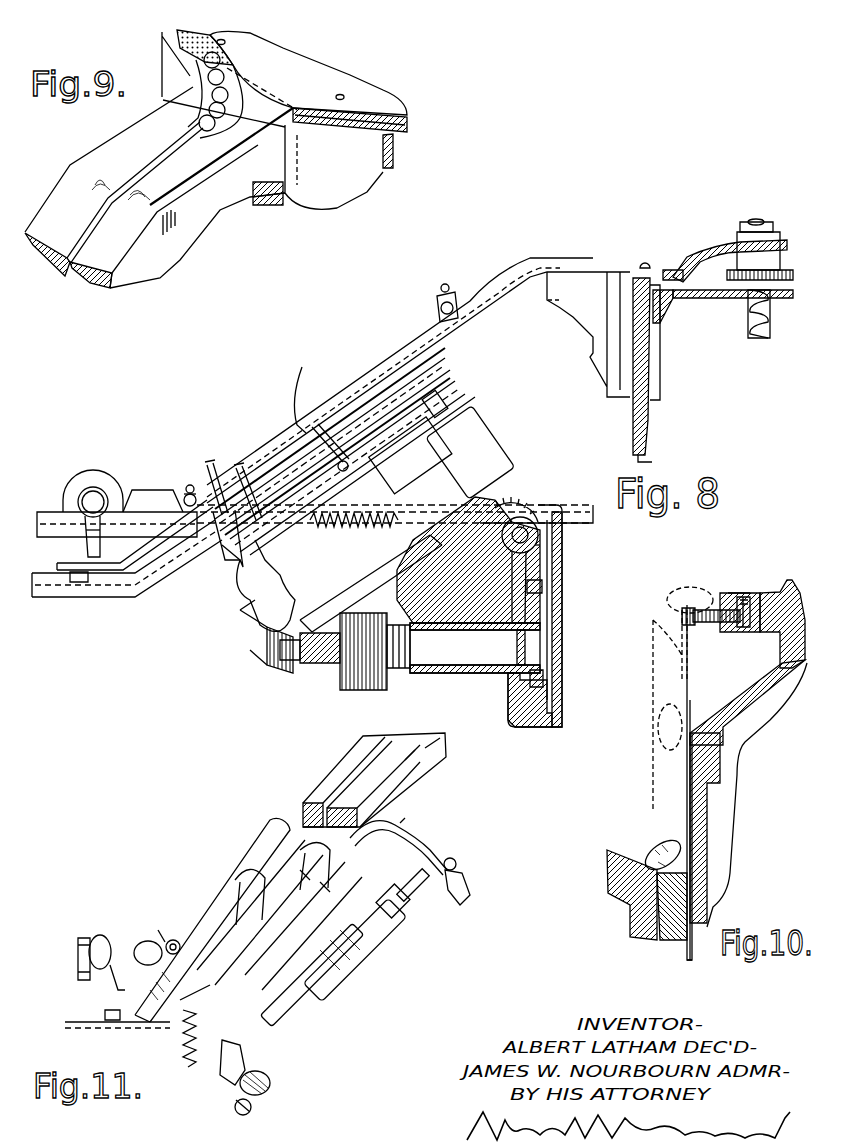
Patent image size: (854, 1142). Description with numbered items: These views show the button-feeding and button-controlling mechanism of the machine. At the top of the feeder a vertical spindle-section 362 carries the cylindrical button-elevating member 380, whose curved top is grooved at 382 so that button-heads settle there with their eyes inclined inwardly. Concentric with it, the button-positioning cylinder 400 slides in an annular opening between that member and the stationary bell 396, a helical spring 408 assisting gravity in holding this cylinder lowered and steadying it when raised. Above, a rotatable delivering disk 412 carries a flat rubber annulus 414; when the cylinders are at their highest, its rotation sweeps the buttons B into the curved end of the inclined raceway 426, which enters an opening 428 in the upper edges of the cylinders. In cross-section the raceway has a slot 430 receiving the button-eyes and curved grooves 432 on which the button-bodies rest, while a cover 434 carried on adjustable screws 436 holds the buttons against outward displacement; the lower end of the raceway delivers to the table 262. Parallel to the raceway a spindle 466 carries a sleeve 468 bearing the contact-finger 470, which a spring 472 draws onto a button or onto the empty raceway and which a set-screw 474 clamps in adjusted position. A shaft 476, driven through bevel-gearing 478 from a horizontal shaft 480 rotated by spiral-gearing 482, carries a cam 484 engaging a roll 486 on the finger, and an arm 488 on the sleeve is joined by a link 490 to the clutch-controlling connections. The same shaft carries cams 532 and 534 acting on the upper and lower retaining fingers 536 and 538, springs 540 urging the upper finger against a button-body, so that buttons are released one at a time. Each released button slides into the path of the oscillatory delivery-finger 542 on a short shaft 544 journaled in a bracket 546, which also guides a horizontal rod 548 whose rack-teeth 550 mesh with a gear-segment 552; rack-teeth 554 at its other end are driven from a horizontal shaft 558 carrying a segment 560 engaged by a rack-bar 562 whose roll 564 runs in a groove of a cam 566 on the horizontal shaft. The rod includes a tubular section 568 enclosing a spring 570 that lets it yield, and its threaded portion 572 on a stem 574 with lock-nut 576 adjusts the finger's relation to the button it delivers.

In FIG. 8, the table 262 is at (45, 600).
In FIG. 11, the table 262 is at (80, 1030).
In FIG. 8, the spindle-section 362 is at (757, 338).
In FIG. 8, the button-elevating member 380 is at (656, 352).
In FIG. 10, the button-elevating member 380 is at (690, 932).
In FIG. 10, the groove 382 is at (683, 880).
In FIG. 10, the stationary bell 396 is at (765, 705).
In FIG. 8, the button-positioning cylinder 400 is at (650, 437).
In FIG. 10, the button-positioning cylinder 400 is at (688, 787).
In FIG. 8, the helical spring 408 is at (746, 312).
In FIG. 9, the delivering disk 412 is at (292, 84).
In FIG. 8, the delivering disk 412 is at (720, 243).
In FIG. 10, the delivering disk 412 is at (788, 590).
In FIG. 9, the annulus 414 is at (407, 135).
In FIG. 8, the annulus 414 is at (661, 267).
In FIG. 10, the annulus 414 is at (703, 627).
In FIG. 9, the raceway 426 is at (201, 198).
In FIG. 11, the raceway 426 is at (400, 773).
In FIG. 9, the opening 428 is at (277, 200).
In FIG. 9, the slot 430 is at (133, 168).
In FIG. 11, the slot 430 is at (315, 810).
In FIG. 9, the curved grooves 432 is at (112, 218).
In FIG. 11, the curved grooves 432 is at (360, 770).
In FIG. 8, the cover 434 is at (537, 257).
In FIG. 11, the cover 434 is at (240, 848).
In FIG. 8, the screws 436 is at (445, 285).
In FIG. 8, the spindle 466 is at (232, 610).
In FIG. 11, the spindle 466 is at (228, 1062).
In FIG. 8, the sleeve 468 is at (418, 382).
In FIG. 11, the sleeve 468 is at (392, 832).
In FIG. 11, the contact-finger 470 is at (270, 850).
In FIG. 8, the spring 472 is at (349, 443).
In FIG. 11, the spring 472 is at (322, 875).
In FIG. 11, the set-screw 474 is at (332, 890).
In FIG. 8, the shaft 476 is at (495, 443).
In FIG. 11, the shaft 476 is at (418, 895).
In FIG. 8, the bevel-gearing 478 is at (262, 665).
In FIG. 11, the bevel-gearing 478 is at (252, 1112).
In FIG. 8, the horizontal shaft 480 is at (322, 665).
In FIG. 8, the spiral-gearing 482 is at (385, 690).
In FIG. 8, the cam 484 is at (436, 440).
In FIG. 11, the cam 484 is at (395, 940).
In FIG. 8, the roll 486 is at (395, 480).
In FIG. 11, the roll 486 is at (370, 958).
In FIG. 8, the arm 488 is at (445, 400).
In FIG. 11, the arm 488 is at (420, 845).
In FIG. 11, the link 490 is at (470, 890).
In FIG. 8, the cam 532 is at (335, 600).
In FIG. 11, the cam 532 is at (305, 1025).
In FIG. 8, the cam 534 is at (288, 662).
In FIG. 11, the cam 534 is at (272, 1080).
In FIG. 8, the upper retaining finger 536 is at (240, 470).
In FIG. 11, the upper retaining finger 536 is at (195, 915).
In FIG. 8, the lower retaining finger 538 is at (208, 462).
In FIG. 11, the lower retaining finger 538 is at (173, 940).
In FIG. 11, the springs 540 is at (190, 1068).
In FIG. 8, the delivery-finger 542 is at (82, 584).
In FIG. 11, the delivery-finger 542 is at (115, 1022).
In FIG. 11, the short shaft 544 is at (98, 935).
In FIG. 8, the bracket 546 is at (62, 555).
In FIG. 8, the horizontal rod 548 is at (40, 513).
In FIG. 8, the rack-teeth 550 is at (128, 487).
In FIG. 8, the gear-segment 552 is at (66, 485).
In FIG. 8, the rack-teeth 554 is at (520, 508).
In FIG. 8, the horizontal shaft 558 is at (520, 570).
In FIG. 8, the segment 560 is at (538, 545).
In FIG. 8, the rack-bar 562 is at (544, 588).
In FIG. 8, the roll 564 is at (538, 600).
In FIG. 8, the cam 566 is at (563, 725).
In FIG. 8, the tubular section 568 is at (340, 560).
In FIG. 8, the spring 570 is at (385, 532).
In FIG. 8, the threaded portion 572 is at (140, 505).
In FIG. 8, the stem 574 is at (155, 510).
In FIG. 8, the lock-nut 576 is at (213, 547).
In FIG. 9, the buttons B is at (203, 72).
In FIG. 8, the buttons B is at (645, 262).
In FIG. 10, the buttons B is at (645, 848).
In FIG. 11, the buttons B is at (245, 885).